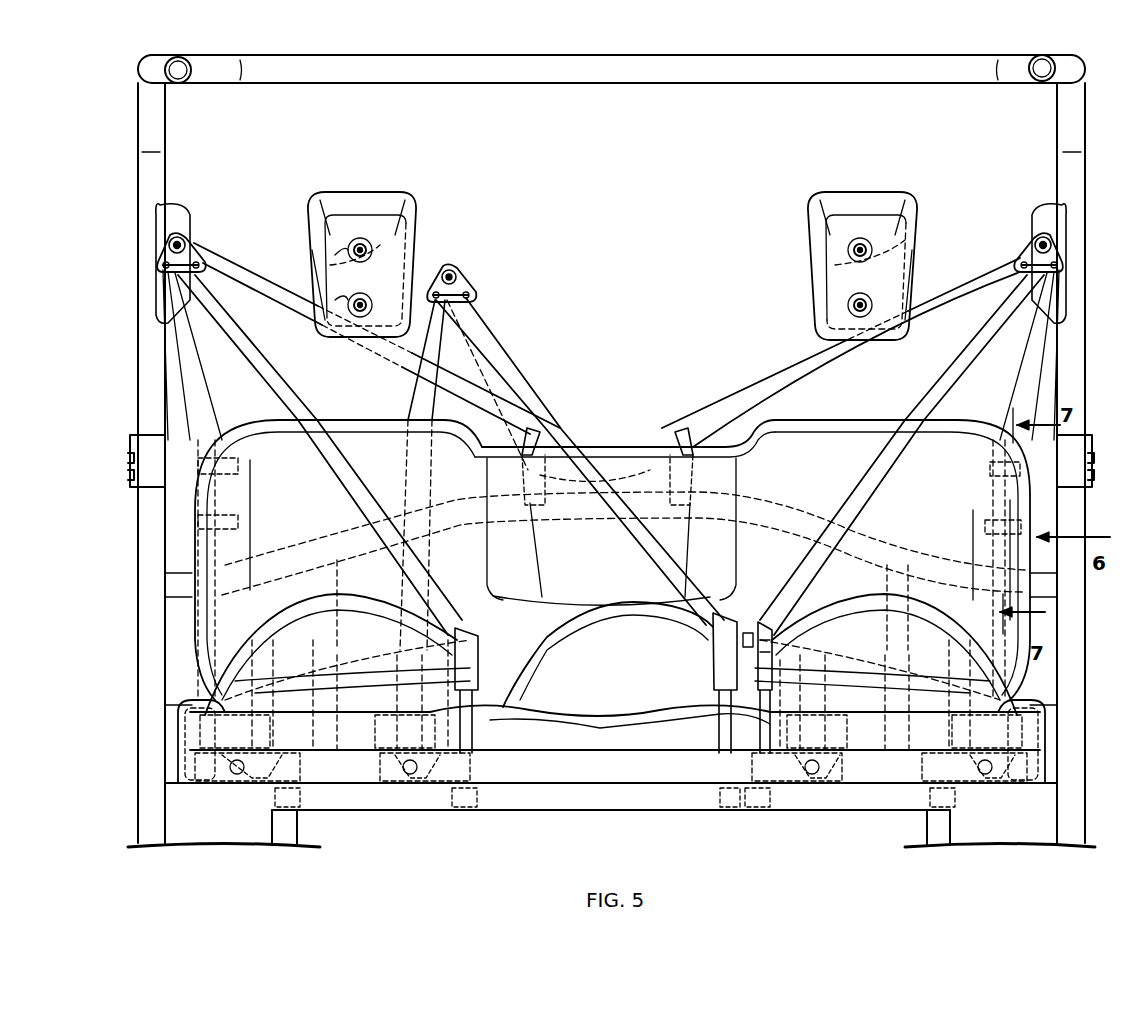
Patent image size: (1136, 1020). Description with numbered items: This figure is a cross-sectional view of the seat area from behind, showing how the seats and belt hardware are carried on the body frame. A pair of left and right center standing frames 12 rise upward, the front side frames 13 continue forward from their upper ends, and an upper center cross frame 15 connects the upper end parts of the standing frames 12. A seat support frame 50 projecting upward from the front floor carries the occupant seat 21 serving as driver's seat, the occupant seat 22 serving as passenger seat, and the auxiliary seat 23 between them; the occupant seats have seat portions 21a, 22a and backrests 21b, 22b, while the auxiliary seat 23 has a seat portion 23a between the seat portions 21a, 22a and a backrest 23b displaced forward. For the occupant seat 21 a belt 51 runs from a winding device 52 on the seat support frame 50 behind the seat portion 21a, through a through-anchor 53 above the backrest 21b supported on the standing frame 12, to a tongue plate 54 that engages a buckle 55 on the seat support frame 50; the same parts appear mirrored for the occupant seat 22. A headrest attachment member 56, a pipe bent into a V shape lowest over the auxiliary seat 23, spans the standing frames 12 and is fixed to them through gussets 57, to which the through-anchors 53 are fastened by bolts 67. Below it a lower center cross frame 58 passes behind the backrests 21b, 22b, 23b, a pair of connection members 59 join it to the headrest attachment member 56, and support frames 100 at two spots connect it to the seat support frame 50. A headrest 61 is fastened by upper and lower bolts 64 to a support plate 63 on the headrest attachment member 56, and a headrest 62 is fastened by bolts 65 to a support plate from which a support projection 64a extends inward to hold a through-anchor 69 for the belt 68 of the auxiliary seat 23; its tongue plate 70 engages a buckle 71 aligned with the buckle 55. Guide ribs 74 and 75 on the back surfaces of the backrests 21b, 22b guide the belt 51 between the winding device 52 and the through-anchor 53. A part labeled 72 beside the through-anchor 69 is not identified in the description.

The center standing frame 12 is at (138, 345).
The front side frame 13 is at (181, 83).
The upper center cross frame 15 is at (597, 68).
The occupant seat 21 is at (870, 412).
The seat portion 21a is at (862, 705).
The backrest 21b is at (820, 440).
The occupant seat 22 is at (340, 412).
The seat portion 22a is at (338, 705).
The backrest 22b is at (265, 445).
The auxiliary seat 23 is at (610, 446).
The seat portion 23a is at (607, 690).
The backrest 23b is at (648, 470).
The seat support frame 50 is at (680, 800).
The belt 51 is at (352, 488).
The winding device 52 is at (260, 712).
The through-anchor 53 is at (197, 257).
The tongue plate 54 is at (462, 625).
The buckle 55 is at (440, 678).
The headrest attachment member 56 is at (756, 386).
The gusset 57 is at (170, 215).
The lower center cross frame 58 is at (585, 520).
The connection member 59 is at (518, 476).
The headrest 61 is at (870, 200).
The headrest 62 is at (385, 200).
The support plate 63 is at (915, 235).
The bolts 64 is at (352, 238).
The support projection 64a is at (425, 270).
The bolts 65 is at (348, 305).
The bolts 67 is at (185, 245).
The belt 68 is at (505, 362).
The through-anchor 69 is at (470, 286).
The tongue plate 70 is at (765, 620).
The buckle 71 is at (720, 668).
The center anchor bolt 72 is at (457, 268).
The guide rib 74 is at (240, 522).
The guide rib 75 is at (248, 466).
The support frame 100 is at (318, 578).